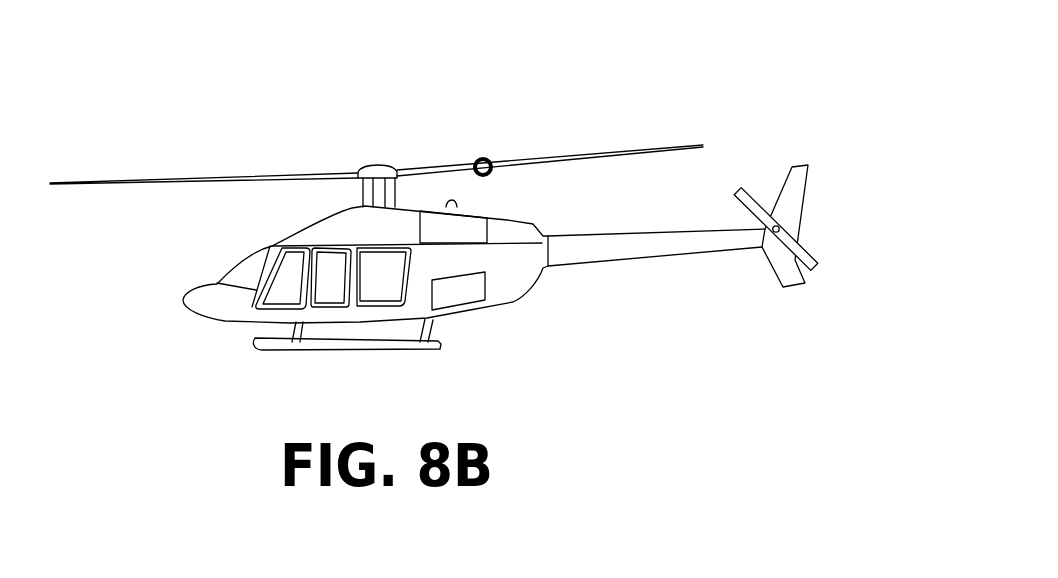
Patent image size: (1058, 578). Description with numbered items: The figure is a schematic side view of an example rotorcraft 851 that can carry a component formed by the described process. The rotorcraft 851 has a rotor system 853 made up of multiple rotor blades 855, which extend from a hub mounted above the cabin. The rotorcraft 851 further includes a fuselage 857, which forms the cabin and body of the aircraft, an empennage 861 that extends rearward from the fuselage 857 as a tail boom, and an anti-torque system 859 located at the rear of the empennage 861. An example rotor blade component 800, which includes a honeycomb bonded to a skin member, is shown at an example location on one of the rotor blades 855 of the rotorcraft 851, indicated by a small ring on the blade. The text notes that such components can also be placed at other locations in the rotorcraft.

The rotorcraft 851 is at (189, 118).
The rotor system 853 is at (392, 140).
The rotor blade 855 is at (641, 148).
The rotor blade component 800 is at (495, 163).
The fuselage 857 is at (243, 323).
The anti-torque system 859 is at (819, 302).
The empennage 861 is at (628, 260).